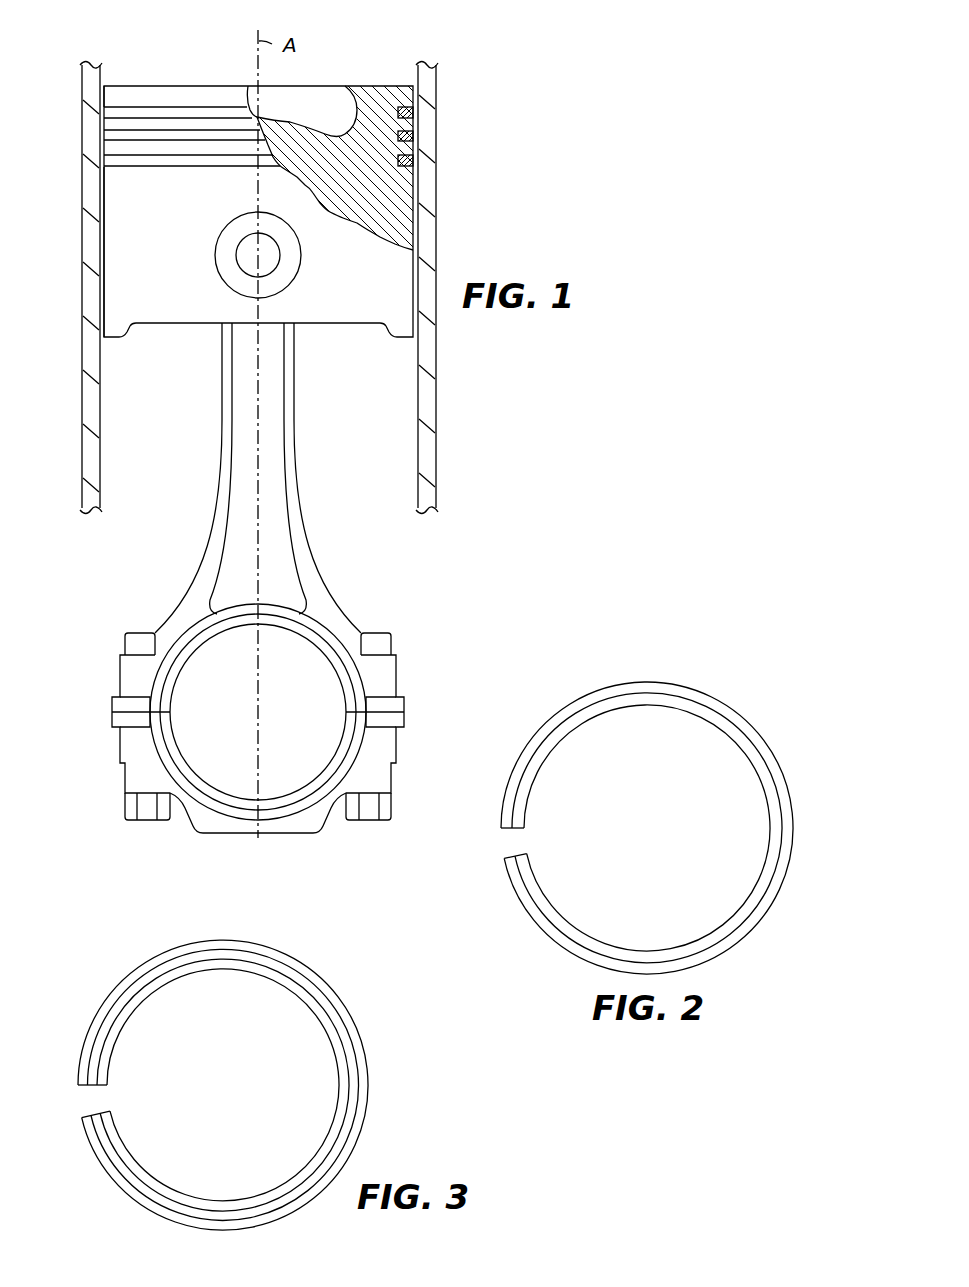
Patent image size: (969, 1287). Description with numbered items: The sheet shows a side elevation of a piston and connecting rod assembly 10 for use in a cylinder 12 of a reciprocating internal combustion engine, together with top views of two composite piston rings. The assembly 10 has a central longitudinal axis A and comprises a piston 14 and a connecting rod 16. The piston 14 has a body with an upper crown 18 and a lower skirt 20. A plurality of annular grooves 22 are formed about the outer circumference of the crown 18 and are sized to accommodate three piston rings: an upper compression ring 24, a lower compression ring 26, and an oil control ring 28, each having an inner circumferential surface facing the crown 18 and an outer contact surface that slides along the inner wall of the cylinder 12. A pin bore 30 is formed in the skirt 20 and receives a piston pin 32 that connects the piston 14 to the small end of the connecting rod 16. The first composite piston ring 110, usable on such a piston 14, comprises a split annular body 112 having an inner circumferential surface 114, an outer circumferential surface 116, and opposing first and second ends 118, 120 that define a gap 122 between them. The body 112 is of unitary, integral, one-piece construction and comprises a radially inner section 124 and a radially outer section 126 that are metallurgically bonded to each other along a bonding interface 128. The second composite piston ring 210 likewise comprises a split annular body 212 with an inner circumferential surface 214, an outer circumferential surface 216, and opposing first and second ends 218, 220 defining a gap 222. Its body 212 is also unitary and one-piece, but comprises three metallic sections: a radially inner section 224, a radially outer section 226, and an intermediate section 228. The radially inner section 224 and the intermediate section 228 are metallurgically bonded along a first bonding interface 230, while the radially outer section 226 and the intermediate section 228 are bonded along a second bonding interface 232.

In FIG. 1, the piston and connecting rod assembly 10 is at (332, 58).
In FIG. 1, the cylinder 12 is at (435, 460).
In FIG. 1, the piston 14 is at (138, 85).
In FIG. 1, the connecting rod 16 is at (343, 615).
In FIG. 1, the upper crown 18 is at (104, 98).
In FIG. 1, the lower skirt 20 is at (105, 311).
In FIG. 1, the annular grooves 22 is at (417, 117).
In FIG. 1, the upper compression ring 24 is at (102, 110).
In FIG. 1, the lower compression ring 26 is at (102, 134).
In FIG. 1, the oil control ring 28 is at (102, 168).
In FIG. 1, the pin bore 30 is at (228, 265).
In FIG. 1, the piston pin 32 is at (290, 284).
In FIG. 2, the composite piston ring 110 is at (768, 697).
In FIG. 2, the split annular body 112 is at (795, 826).
In FIG. 2, the inner circumferential surface 114 is at (725, 925).
In FIG. 2, the outer circumferential surface 116 is at (757, 927).
In FIG. 2, the first end 118 is at (527, 828).
In FIG. 2, the second end 120 is at (504, 859).
In FIG. 2, the gap 122 is at (518, 842).
In FIG. 2, the radially inner section 124 is at (657, 703).
In FIG. 2, the radially outer section 126 is at (622, 684).
In FIG. 2, the bonding interface 128 is at (692, 700).
In FIG. 3, the composite piston ring 210 is at (360, 976).
In FIG. 3, the split annular body 212 is at (368, 1108).
In FIG. 3, the inner circumferential surface 214 is at (302, 1173).
In FIG. 3, the outer circumferential surface 216 is at (364, 1052).
In FIG. 3, the first end 218 is at (103, 1086).
In FIG. 3, the second end 220 is at (82, 1118).
In FIG. 3, the gap 222 is at (92, 1100).
In FIG. 3, the radially inner section 224 is at (128, 1168).
In FIG. 3, the radially outer section 226 is at (162, 1211).
In FIG. 3, the intermediate section 228 is at (185, 957).
In FIG. 3, the first bonding interface 230 is at (141, 987).
In FIG. 3, the second bonding interface 232 is at (278, 957).